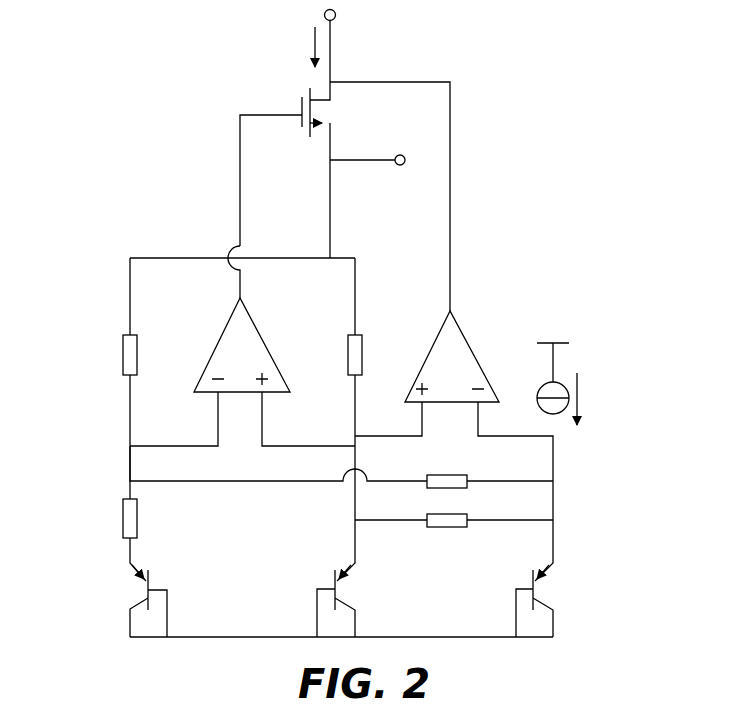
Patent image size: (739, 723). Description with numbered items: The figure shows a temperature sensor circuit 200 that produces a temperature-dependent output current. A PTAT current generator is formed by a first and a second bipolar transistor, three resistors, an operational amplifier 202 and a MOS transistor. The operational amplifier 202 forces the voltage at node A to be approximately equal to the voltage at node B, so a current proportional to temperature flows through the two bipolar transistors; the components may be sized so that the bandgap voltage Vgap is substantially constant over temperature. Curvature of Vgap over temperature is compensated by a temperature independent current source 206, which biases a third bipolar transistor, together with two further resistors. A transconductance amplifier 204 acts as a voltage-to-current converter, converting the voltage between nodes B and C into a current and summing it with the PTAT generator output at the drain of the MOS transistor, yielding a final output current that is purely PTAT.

The temperature sensor circuit 200 is at (88, 56).
The operational amplifier 202 is at (256, 327).
The transconductance amplifier 204 is at (468, 343).
The temperature independent current source 206 is at (543, 387).